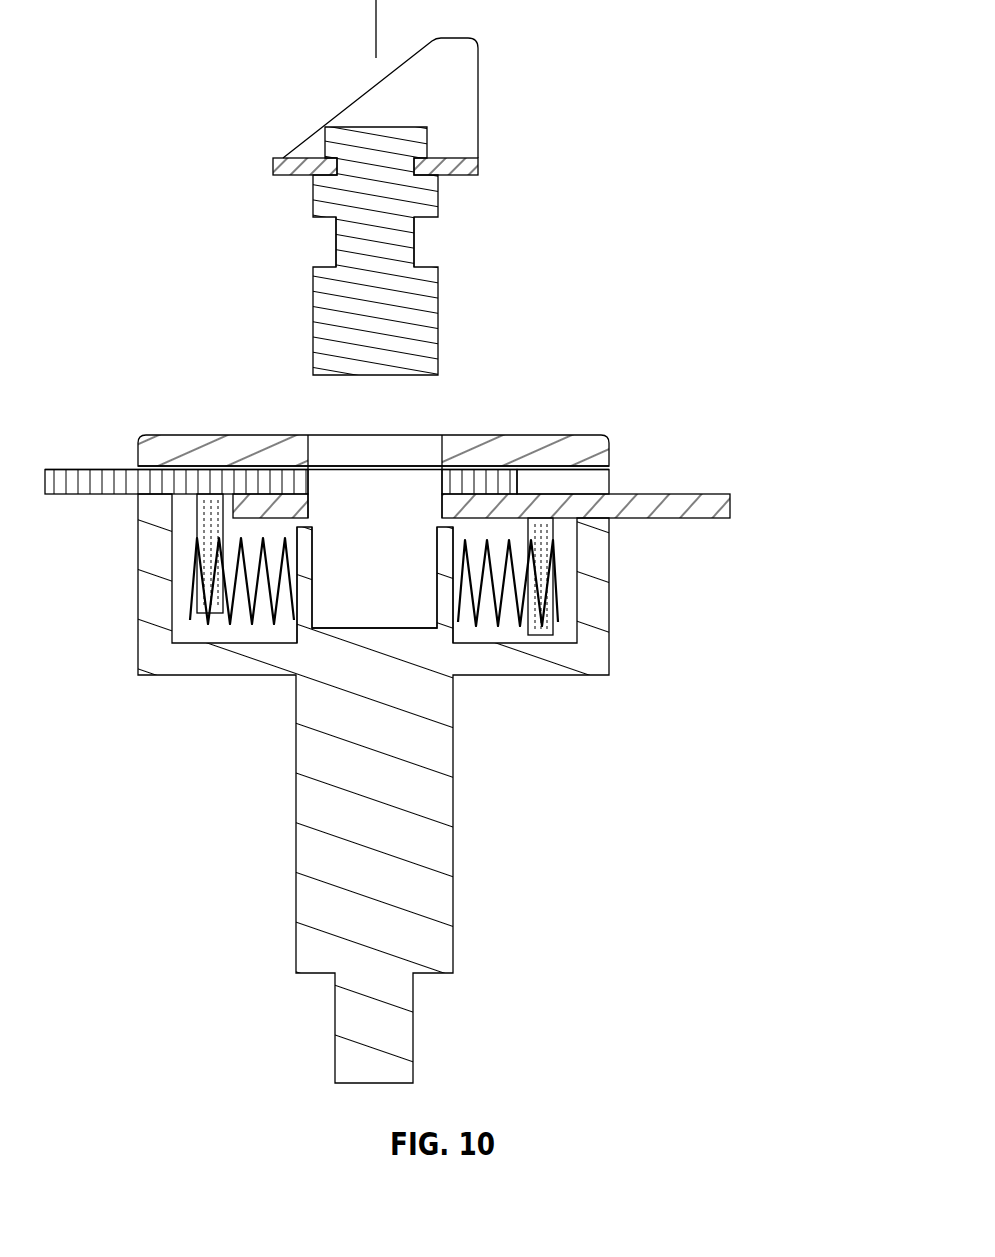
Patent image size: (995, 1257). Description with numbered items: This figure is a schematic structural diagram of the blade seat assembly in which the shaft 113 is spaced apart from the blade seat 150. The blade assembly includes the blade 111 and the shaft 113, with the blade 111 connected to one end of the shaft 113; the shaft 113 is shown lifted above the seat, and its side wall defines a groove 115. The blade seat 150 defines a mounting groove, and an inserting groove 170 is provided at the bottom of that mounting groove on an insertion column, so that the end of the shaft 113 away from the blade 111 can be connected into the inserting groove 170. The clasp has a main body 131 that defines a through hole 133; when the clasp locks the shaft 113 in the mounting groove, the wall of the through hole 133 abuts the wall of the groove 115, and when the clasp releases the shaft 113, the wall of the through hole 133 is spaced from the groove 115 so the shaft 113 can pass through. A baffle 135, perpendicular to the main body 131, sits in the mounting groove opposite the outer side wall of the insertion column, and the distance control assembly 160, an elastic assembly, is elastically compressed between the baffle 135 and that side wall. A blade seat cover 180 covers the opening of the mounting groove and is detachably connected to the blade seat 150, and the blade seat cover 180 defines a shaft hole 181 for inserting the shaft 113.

The blade 111 is at (445, 103).
The shaft 113 is at (403, 310).
The groove 115 is at (458, 248).
The main body 131 is at (680, 512).
The through hole 133 is at (321, 474).
The baffle 135 is at (547, 530).
The blade seat 150 is at (430, 787).
The distance control assembly 160 is at (503, 630).
The inserting groove 170 is at (333, 597).
The blade seat cover 180 is at (598, 437).
The shaft hole 181 is at (337, 439).